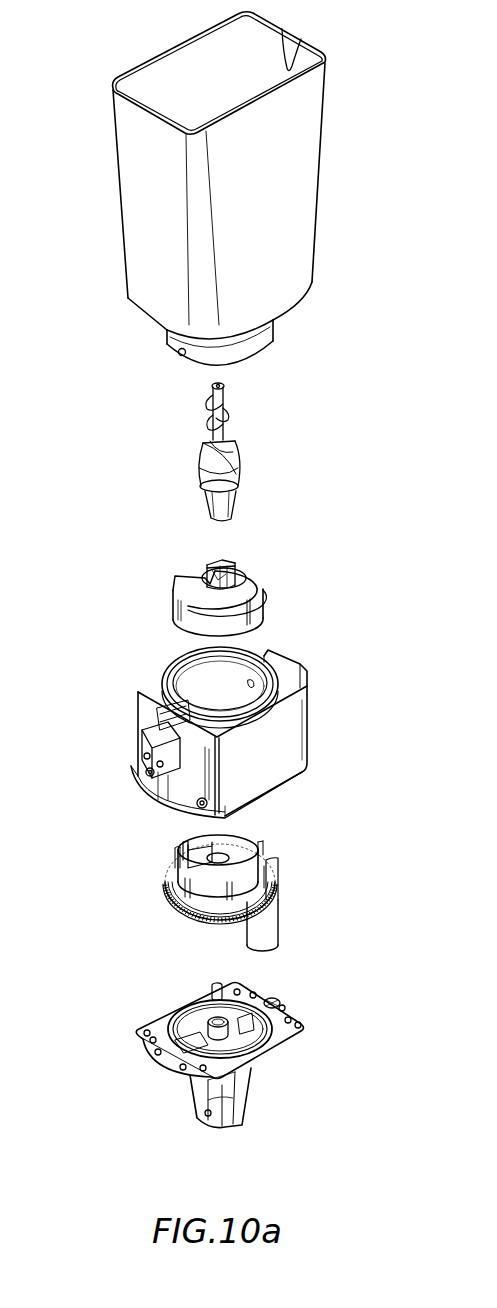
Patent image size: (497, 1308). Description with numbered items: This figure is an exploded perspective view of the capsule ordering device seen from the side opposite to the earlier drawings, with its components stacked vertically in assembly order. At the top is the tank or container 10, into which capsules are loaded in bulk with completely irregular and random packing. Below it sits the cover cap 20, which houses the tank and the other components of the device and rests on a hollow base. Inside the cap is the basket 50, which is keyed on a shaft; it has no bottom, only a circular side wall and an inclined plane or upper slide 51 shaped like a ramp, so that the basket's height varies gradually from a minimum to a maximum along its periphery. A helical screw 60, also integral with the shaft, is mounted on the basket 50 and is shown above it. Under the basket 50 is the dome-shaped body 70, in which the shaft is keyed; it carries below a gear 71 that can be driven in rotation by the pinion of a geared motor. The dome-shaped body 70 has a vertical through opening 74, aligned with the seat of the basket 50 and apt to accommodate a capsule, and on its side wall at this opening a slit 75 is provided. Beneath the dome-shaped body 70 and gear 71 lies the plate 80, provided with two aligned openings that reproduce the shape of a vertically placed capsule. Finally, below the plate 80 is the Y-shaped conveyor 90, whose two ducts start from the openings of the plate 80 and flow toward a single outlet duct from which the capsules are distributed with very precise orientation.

The tank or container 10 is at (307, 135).
The cover cap 20 is at (282, 737).
The basket 50 is at (260, 605).
The inclined plane or upper slide 51 is at (242, 575).
The helical screw 60 is at (235, 445).
The dome-shaped body 70 is at (247, 883).
The gear 71 is at (175, 903).
The vertical through opening 74 is at (226, 847).
The slit 75 is at (183, 850).
The plate 80 is at (280, 1038).
The Y-shaped conveyor 90 is at (242, 1098).